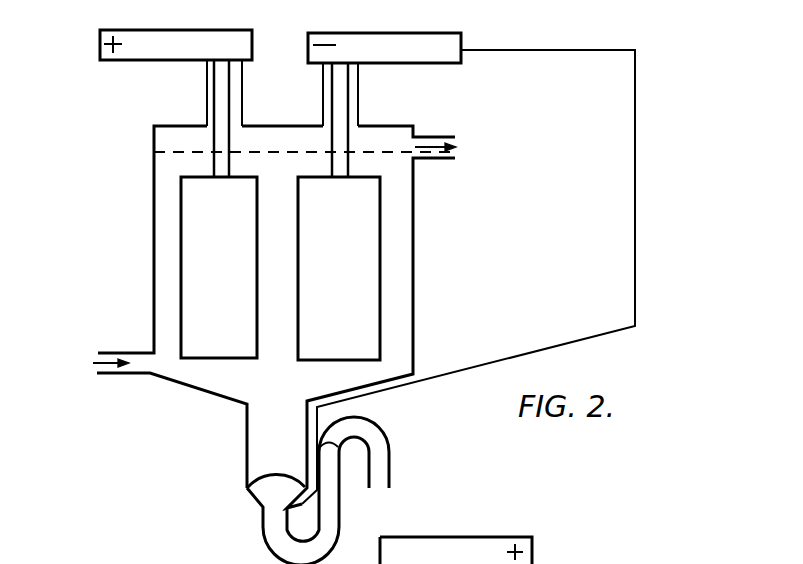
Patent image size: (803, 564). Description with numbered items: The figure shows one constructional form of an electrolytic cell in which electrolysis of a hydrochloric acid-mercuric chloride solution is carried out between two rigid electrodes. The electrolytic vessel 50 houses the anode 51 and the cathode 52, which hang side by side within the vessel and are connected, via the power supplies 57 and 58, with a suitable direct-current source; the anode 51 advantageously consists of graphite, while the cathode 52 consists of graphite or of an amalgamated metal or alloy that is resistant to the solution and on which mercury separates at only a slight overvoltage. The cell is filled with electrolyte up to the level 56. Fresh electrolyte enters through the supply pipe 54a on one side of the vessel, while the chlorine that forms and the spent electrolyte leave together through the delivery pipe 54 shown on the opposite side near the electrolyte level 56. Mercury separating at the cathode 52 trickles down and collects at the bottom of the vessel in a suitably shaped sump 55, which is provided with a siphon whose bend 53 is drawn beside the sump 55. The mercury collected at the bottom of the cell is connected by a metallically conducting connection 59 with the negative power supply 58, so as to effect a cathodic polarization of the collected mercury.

The electrolytic vessel 50 is at (413, 306).
The anode 51 is at (219, 209).
The cathode 52 is at (339, 211).
The inverted bend of trap tube 53 is at (389, 478).
The delivery pipe 54 is at (455, 150).
The supply pipe 54a is at (89, 360).
The sump 55 is at (270, 479).
The electrolyte level 56 is at (395, 153).
The power supply 57 is at (186, 51).
The negative power supply 58 is at (431, 56).
The metallically conducting connection 59 is at (486, 277).